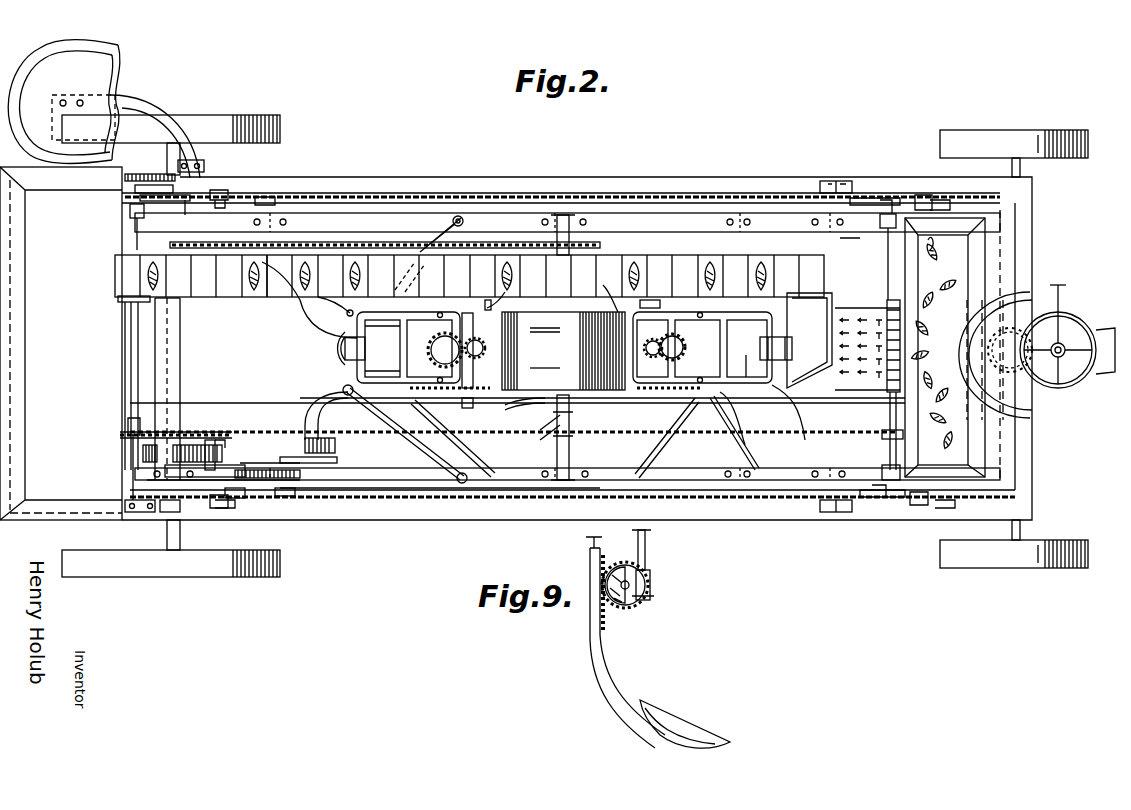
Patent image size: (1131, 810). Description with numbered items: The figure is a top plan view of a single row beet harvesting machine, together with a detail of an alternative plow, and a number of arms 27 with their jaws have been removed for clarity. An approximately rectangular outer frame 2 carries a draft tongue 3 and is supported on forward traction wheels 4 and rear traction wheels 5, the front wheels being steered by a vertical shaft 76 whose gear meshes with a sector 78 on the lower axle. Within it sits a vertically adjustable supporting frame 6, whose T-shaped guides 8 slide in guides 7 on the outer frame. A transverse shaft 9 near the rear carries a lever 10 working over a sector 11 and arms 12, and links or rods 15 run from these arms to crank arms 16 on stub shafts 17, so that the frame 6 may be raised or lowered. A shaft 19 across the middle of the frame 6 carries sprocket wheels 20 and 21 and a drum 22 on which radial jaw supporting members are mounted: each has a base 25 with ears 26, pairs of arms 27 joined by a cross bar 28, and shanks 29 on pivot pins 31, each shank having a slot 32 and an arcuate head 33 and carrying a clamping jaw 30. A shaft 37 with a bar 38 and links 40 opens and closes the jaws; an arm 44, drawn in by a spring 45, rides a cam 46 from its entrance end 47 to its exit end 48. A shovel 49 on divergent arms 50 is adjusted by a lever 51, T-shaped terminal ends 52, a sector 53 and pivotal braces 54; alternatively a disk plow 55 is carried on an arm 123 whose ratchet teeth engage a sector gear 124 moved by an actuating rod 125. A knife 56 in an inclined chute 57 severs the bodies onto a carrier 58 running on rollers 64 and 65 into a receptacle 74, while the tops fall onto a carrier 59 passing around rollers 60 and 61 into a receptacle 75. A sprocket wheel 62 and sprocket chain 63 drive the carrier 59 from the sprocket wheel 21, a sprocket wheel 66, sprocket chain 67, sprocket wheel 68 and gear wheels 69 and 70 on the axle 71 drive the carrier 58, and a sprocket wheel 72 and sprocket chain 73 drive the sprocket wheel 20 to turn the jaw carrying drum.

In FIG. 2, the outer frame 2 is at (570, 177).
In FIG. 2, the draft tongue 3 is at (1070, 320).
In FIG. 2, the forward traction wheels 4 is at (1008, 130).
In FIG. 2, the rear traction wheels 5 is at (262, 115).
In FIG. 2, the supporting frame 6 is at (488, 176).
In FIG. 2, the guides 7 is at (222, 190).
In FIG. 2, the guides 8 is at (258, 205).
In FIG. 2, the shaft 9 is at (125, 380).
In FIG. 2, the lever 10 is at (172, 182).
In FIG. 2, the sector 11 is at (130, 180).
In FIG. 2, the arms 12 is at (158, 200).
In FIG. 2, the links or rods 15 is at (410, 177).
In FIG. 2, the crank arms 16 is at (865, 198).
In FIG. 2, the stub shafts 17 is at (822, 181).
In FIG. 2, the shaft 19 is at (580, 403).
In FIG. 2, the sprocket wheel 20 is at (600, 245).
In FIG. 2, the sprocket wheel 21 is at (557, 430).
In FIG. 2, the drum 22 is at (563, 351).
In FIG. 2, the base 25 is at (470, 330).
In FIG. 2, the ears 26 is at (514, 422).
In FIG. 2, the arms 27 is at (563, 348).
In FIG. 2, the cross bar 28 is at (562, 347).
In FIG. 2, the shank 29 is at (385, 312).
In FIG. 2, the clamping jaw 30 is at (343, 345).
In FIG. 2, the pivot pin 31 is at (438, 312).
In FIG. 2, the slot 32 is at (645, 308).
In FIG. 2, the arcuate head 33 is at (500, 295).
In FIG. 2, the shaft 37 is at (470, 338).
In FIG. 2, the bar 38 is at (480, 352).
In FIG. 2, the links 40 is at (475, 332).
In FIG. 2, the arm 44 is at (425, 400).
In FIG. 2, the spring 45 is at (660, 410).
In FIG. 2, the cam 46 is at (540, 430).
In FIG. 2, the entrance end 47 is at (531, 444).
In FIG. 2, the exit end 48 is at (745, 445).
In FIG. 2, the plow share or shovel 49 is at (340, 332).
In FIG. 2, the divergent arms 50 is at (320, 303).
In FIG. 2, the lever 51 is at (290, 497).
In FIG. 2, the T-shaped terminal ends 52 is at (330, 237).
In FIG. 2, the sector 53 is at (270, 500).
In FIG. 2, the pivotal braces 54 is at (440, 213).
In FIG. 9, the disk plow 55 is at (690, 728).
In FIG. 2, the knife 56 is at (790, 350).
In FIG. 2, the inclined chute 57 is at (838, 305).
In FIG. 2, the carrier 58 is at (228, 297).
In FIG. 2, the carrier 59 is at (868, 322).
In FIG. 2, the roller 60 is at (318, 415).
In FIG. 2, the roller 61 is at (900, 405).
In FIG. 2, the sprocket wheel 62 is at (884, 432).
In FIG. 2, the sprocket chain 63 is at (795, 432).
In FIG. 2, the roller 64 is at (845, 248).
In FIG. 2, the roller 65 is at (118, 300).
In FIG. 2, the sprocket wheel 66 is at (118, 434).
In FIG. 2, the sprocket chain 67 is at (185, 432).
In FIG. 2, the sprocket wheel 68 is at (228, 432).
In FIG. 2, the gear wheel 69 is at (225, 440).
In FIG. 2, the gear wheel 70 is at (143, 453).
In FIG. 2, the axle 71 is at (180, 372).
In FIG. 2, the sprocket wheel 72 is at (193, 249).
In FIG. 2, the sprocket chain 73 is at (273, 274).
In FIG. 2, the receptacle 74 is at (61, 343).
In FIG. 2, the receptacle 75 is at (945, 347).
In FIG. 2, the vertical shaft 76 is at (1058, 287).
In FIG. 2, the sector 78 is at (1050, 385).
In FIG. 9, the arm 123 is at (610, 662).
In FIG. 9, the sector gear 124 is at (640, 603).
In FIG. 9, the actuating rod 125 is at (648, 552).